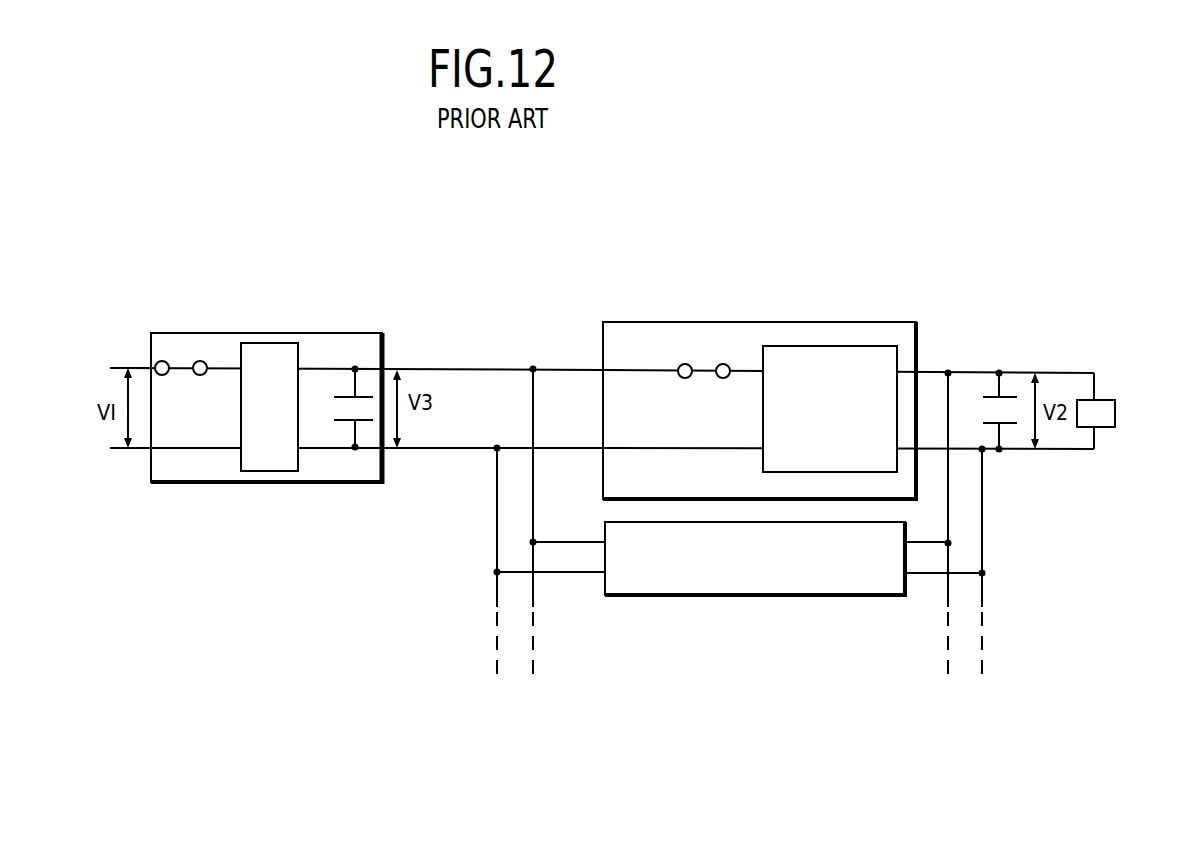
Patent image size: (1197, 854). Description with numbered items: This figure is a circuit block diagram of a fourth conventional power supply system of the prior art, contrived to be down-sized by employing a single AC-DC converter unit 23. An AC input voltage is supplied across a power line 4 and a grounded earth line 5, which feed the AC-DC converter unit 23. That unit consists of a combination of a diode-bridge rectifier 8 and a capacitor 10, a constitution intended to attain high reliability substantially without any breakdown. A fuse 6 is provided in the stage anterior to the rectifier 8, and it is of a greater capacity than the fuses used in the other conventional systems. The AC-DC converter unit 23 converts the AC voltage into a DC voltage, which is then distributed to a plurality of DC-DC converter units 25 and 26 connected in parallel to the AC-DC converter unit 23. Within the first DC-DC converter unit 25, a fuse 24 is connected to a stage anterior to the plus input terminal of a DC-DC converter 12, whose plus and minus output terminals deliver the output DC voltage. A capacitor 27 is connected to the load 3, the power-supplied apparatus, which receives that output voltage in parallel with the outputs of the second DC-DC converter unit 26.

The load 3 is at (1108, 397).
The power line 4 is at (118, 366).
The earth line 5 is at (122, 451).
The fuse 6 is at (181, 369).
The rectifier 8 is at (268, 471).
The capacitor 10 is at (340, 421).
The DC-DC converter 12 is at (890, 336).
The AC-DC converter unit 23 is at (165, 332).
The fuse 24 is at (704, 372).
The DC-DC converter unit 25 is at (612, 321).
The DC-DC converter unit 26 is at (743, 596).
The capacitor 27 is at (1010, 396).